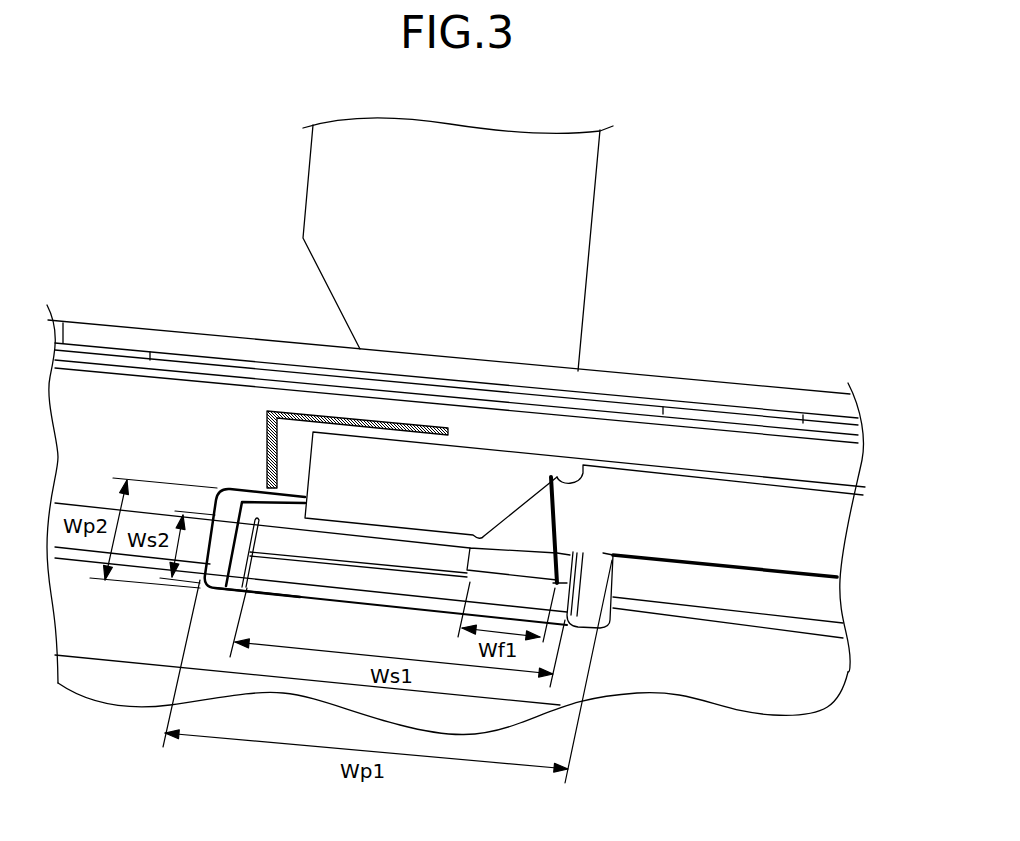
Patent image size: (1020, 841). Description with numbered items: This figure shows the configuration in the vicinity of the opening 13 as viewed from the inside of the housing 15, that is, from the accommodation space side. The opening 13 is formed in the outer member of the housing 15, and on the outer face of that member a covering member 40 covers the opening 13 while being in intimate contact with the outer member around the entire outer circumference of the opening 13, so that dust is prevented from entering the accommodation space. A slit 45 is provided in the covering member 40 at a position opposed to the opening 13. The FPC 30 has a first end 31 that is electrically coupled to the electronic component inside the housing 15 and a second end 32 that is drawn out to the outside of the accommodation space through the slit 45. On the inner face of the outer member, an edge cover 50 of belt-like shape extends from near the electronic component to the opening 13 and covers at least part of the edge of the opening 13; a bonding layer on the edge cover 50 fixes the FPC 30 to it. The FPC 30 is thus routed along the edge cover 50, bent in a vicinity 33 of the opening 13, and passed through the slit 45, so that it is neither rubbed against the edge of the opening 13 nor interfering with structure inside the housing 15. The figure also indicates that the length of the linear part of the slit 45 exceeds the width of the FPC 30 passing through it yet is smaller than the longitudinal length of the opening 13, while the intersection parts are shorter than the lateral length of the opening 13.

The opening 13 is at (250, 488).
The housing 15 is at (660, 390).
The FPC 30 is at (506, 244).
The first end 31 is at (750, 490).
The second end 32 is at (567, 235).
The vicinity of the opening 33 is at (610, 607).
The covering member 40 is at (293, 568).
The slit 45 is at (378, 568).
The edge cover 50 is at (333, 450).